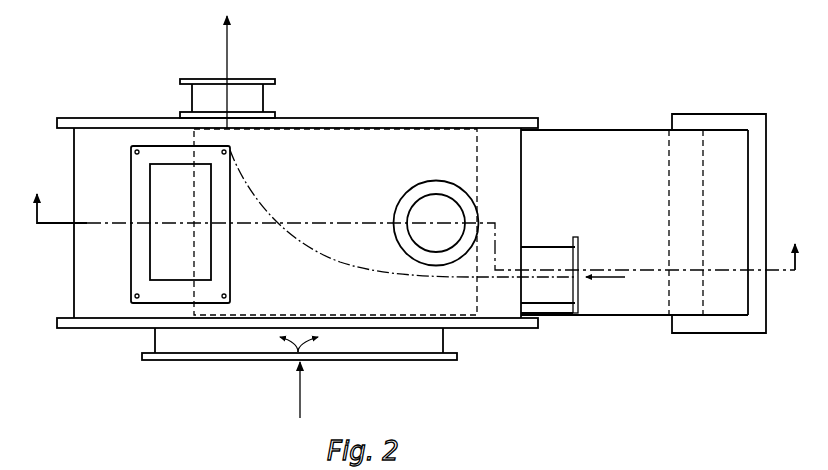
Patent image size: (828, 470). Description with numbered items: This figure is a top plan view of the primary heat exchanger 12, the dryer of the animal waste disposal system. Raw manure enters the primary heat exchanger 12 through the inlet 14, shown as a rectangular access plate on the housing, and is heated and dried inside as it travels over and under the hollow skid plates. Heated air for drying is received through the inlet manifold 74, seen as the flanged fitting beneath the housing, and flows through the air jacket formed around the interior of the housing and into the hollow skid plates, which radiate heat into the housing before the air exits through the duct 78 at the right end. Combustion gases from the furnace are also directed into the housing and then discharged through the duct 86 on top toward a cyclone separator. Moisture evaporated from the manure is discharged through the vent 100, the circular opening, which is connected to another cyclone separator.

The primary heat exchanger 12 is at (123, 82).
The inlet 14 is at (150, 255).
The inlet manifold 74 is at (178, 347).
The duct 78 is at (551, 290).
The duct 86 is at (268, 81).
The vent 100 is at (460, 201).